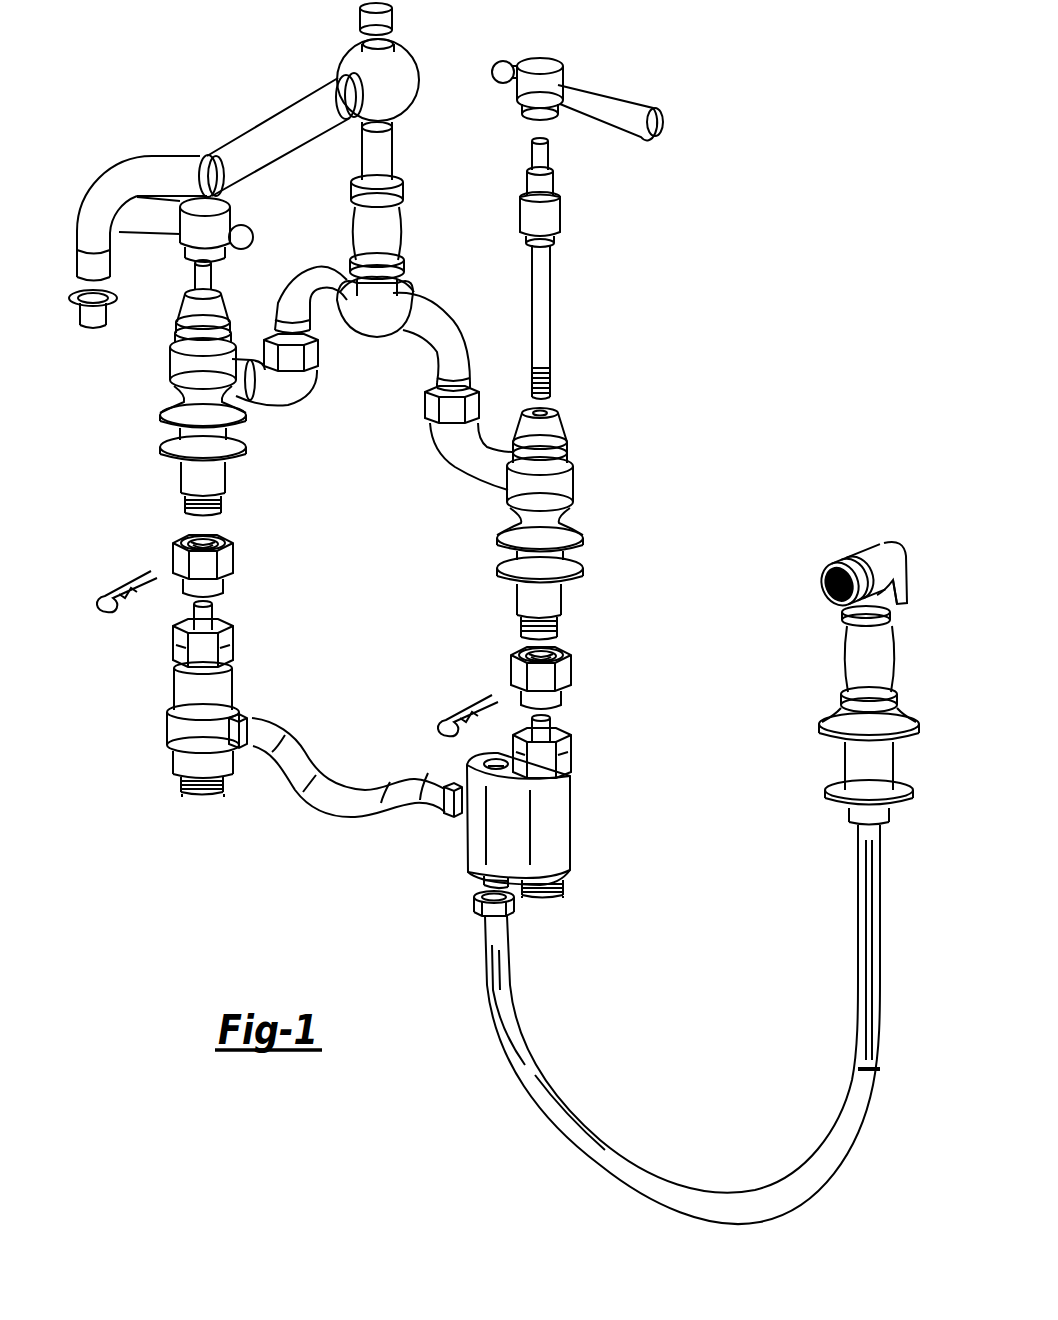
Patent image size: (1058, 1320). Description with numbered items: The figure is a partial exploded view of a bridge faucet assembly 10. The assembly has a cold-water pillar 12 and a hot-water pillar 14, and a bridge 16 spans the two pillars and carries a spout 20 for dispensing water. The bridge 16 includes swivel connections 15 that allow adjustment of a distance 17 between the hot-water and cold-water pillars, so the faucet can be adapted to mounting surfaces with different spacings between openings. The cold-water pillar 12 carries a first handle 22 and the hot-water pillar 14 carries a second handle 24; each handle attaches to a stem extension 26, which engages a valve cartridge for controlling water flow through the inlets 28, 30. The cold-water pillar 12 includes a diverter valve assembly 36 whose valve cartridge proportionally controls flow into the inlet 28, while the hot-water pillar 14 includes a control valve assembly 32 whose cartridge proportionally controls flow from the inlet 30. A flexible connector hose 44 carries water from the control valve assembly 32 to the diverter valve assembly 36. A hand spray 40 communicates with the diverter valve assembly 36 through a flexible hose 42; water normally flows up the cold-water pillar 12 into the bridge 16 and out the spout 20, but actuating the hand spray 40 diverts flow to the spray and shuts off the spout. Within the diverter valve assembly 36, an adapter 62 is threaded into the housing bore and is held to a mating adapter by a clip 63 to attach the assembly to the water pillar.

The faucet assembly 10 is at (770, 268).
The cold-water pillar 12 is at (562, 490).
The hot-water pillar 14 is at (186, 373).
The swivel connections 15 is at (431, 411).
The bridge 16 is at (420, 305).
The distance 17 is at (508, 597).
The spout 20 is at (292, 118).
The first handle 22 is at (625, 103).
The second handle 24 is at (92, 187).
The stem extensions 26 is at (200, 280).
The inlet 28 is at (550, 897).
The inlet 30 is at (206, 796).
The control valve assembly 32 is at (222, 677).
The diverter valve assembly 36 is at (560, 822).
The hand spray 40 is at (857, 660).
The flexible hose 42 is at (862, 985).
The flexible connector hose 44 is at (347, 801).
The adapter 62 is at (228, 558).
The clip 63 is at (130, 580).